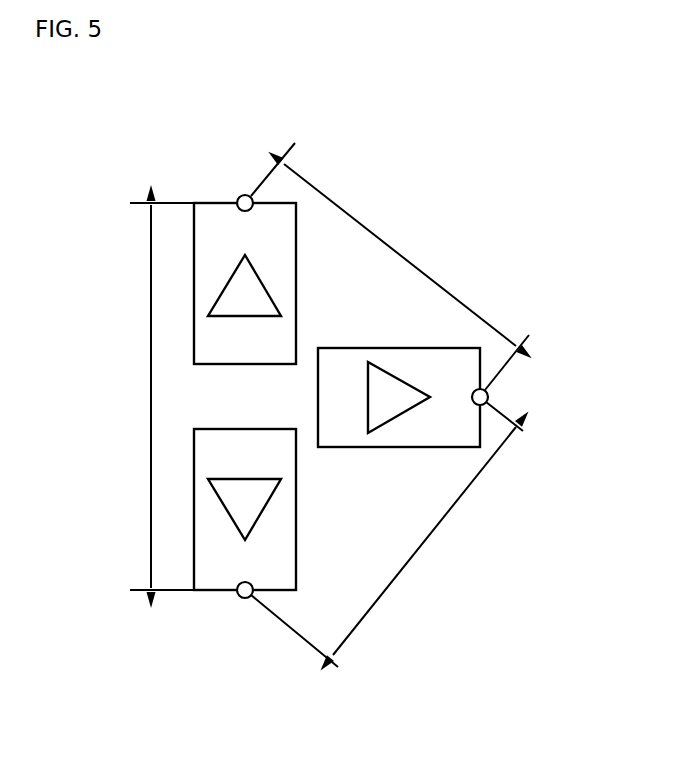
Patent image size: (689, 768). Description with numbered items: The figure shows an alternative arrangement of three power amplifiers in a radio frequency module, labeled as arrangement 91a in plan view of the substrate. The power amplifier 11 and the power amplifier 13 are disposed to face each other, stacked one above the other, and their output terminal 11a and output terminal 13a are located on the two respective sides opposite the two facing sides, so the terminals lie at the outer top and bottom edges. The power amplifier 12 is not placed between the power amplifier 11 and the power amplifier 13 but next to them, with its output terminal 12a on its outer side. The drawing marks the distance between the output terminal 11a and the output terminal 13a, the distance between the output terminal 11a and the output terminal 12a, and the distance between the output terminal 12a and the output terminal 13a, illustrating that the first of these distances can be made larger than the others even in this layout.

The sensor unit 91a is at (389, 126).
The power amplifier 11 is at (296, 273).
The output terminal 11a is at (238, 197).
The power amplifier 12 is at (420, 448).
The output terminal 12a is at (489, 393).
The power amplifier 13 is at (296, 532).
The output terminal 13a is at (238, 597).